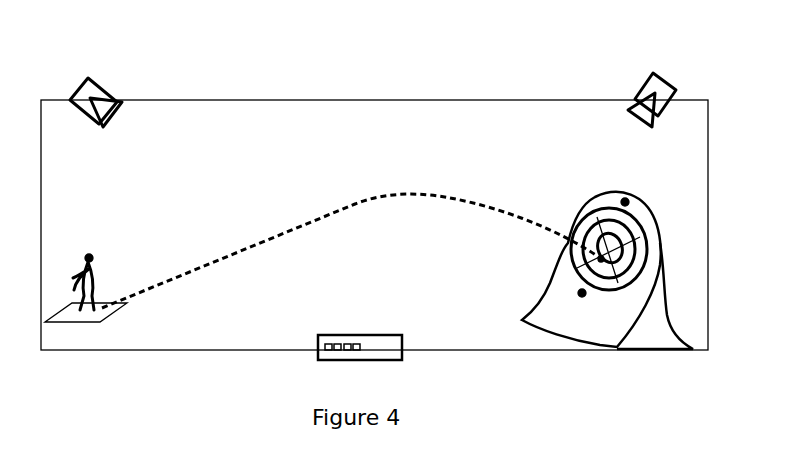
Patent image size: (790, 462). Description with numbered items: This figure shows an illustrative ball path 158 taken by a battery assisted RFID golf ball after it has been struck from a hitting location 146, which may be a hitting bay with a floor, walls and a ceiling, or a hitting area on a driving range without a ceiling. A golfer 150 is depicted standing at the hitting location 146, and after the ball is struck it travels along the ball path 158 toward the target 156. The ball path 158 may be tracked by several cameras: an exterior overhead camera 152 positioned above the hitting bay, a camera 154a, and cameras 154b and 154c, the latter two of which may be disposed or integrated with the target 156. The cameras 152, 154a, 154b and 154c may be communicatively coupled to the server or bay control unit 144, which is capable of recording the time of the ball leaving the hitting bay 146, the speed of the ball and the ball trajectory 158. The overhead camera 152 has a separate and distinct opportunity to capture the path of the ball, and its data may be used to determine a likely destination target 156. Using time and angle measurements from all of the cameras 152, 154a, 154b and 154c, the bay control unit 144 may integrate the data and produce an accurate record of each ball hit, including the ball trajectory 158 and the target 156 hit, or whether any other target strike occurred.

The bay control unit 144 is at (318, 356).
The hitting location 146 is at (113, 310).
The golfer 150 is at (108, 260).
The exterior overhead camera 152 is at (102, 92).
The camera 154a is at (662, 73).
The camera 154b is at (627, 202).
The camera 154c is at (582, 297).
The target 156 is at (660, 258).
The ball path 158 is at (353, 203).